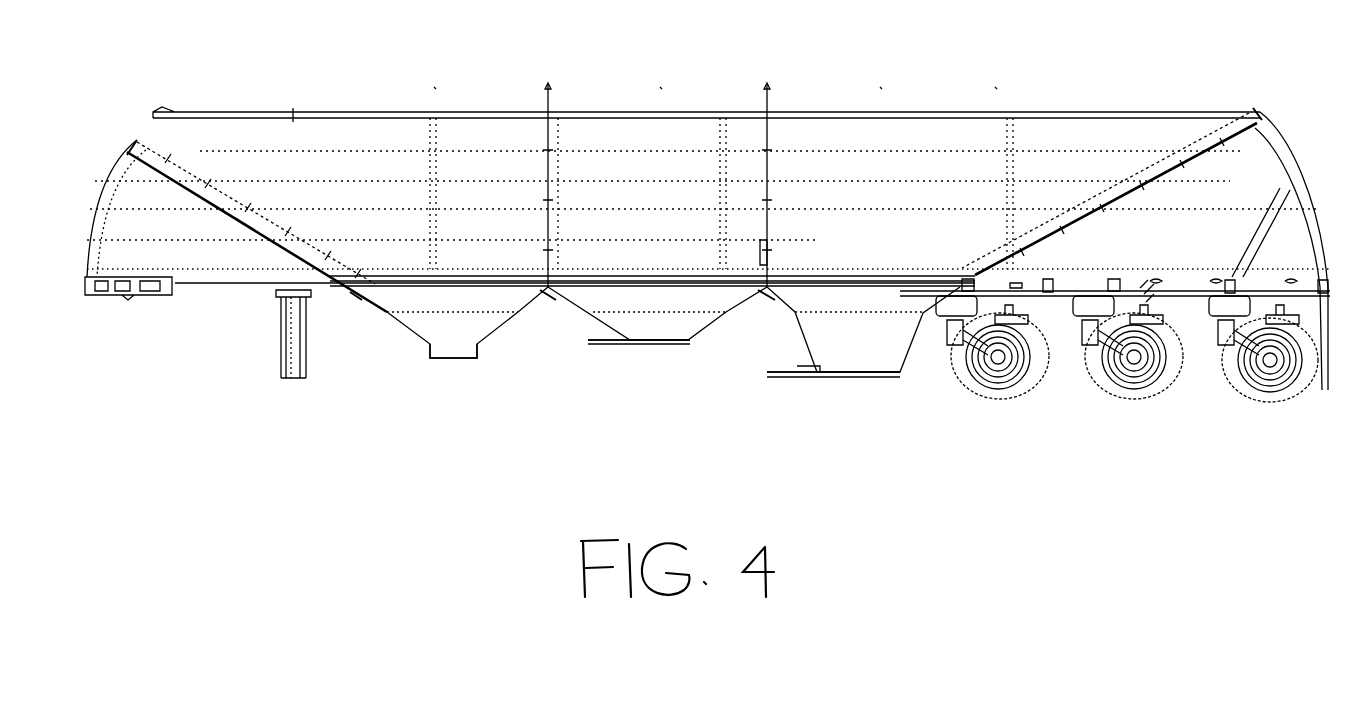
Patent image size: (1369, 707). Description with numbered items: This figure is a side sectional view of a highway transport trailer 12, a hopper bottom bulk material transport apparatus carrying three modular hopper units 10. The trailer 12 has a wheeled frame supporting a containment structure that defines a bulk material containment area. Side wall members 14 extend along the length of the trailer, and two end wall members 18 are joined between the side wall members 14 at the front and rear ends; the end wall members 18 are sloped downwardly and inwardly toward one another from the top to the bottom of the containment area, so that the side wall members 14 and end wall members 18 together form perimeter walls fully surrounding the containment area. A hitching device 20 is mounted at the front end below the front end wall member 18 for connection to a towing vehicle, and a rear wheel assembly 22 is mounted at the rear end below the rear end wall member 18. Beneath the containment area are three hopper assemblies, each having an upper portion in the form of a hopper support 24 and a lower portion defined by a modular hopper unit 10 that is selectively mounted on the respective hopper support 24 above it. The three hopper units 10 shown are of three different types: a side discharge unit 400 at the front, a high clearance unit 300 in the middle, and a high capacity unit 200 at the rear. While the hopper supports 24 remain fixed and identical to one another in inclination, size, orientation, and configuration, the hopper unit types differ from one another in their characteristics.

The modular hopper unit 10 is at (411, 345).
The highway transport trailer 12 is at (44, 151).
The side wall members 14 is at (643, 170).
The end wall members 18 is at (216, 200).
The hitching device 20 is at (262, 318).
The rear wheel assembly 22 is at (1193, 362).
The hopper support 24 is at (367, 298).
The high capacity unit 200 is at (845, 450).
The high clearance unit 300 is at (640, 437).
The side discharge unit 400 is at (432, 446).